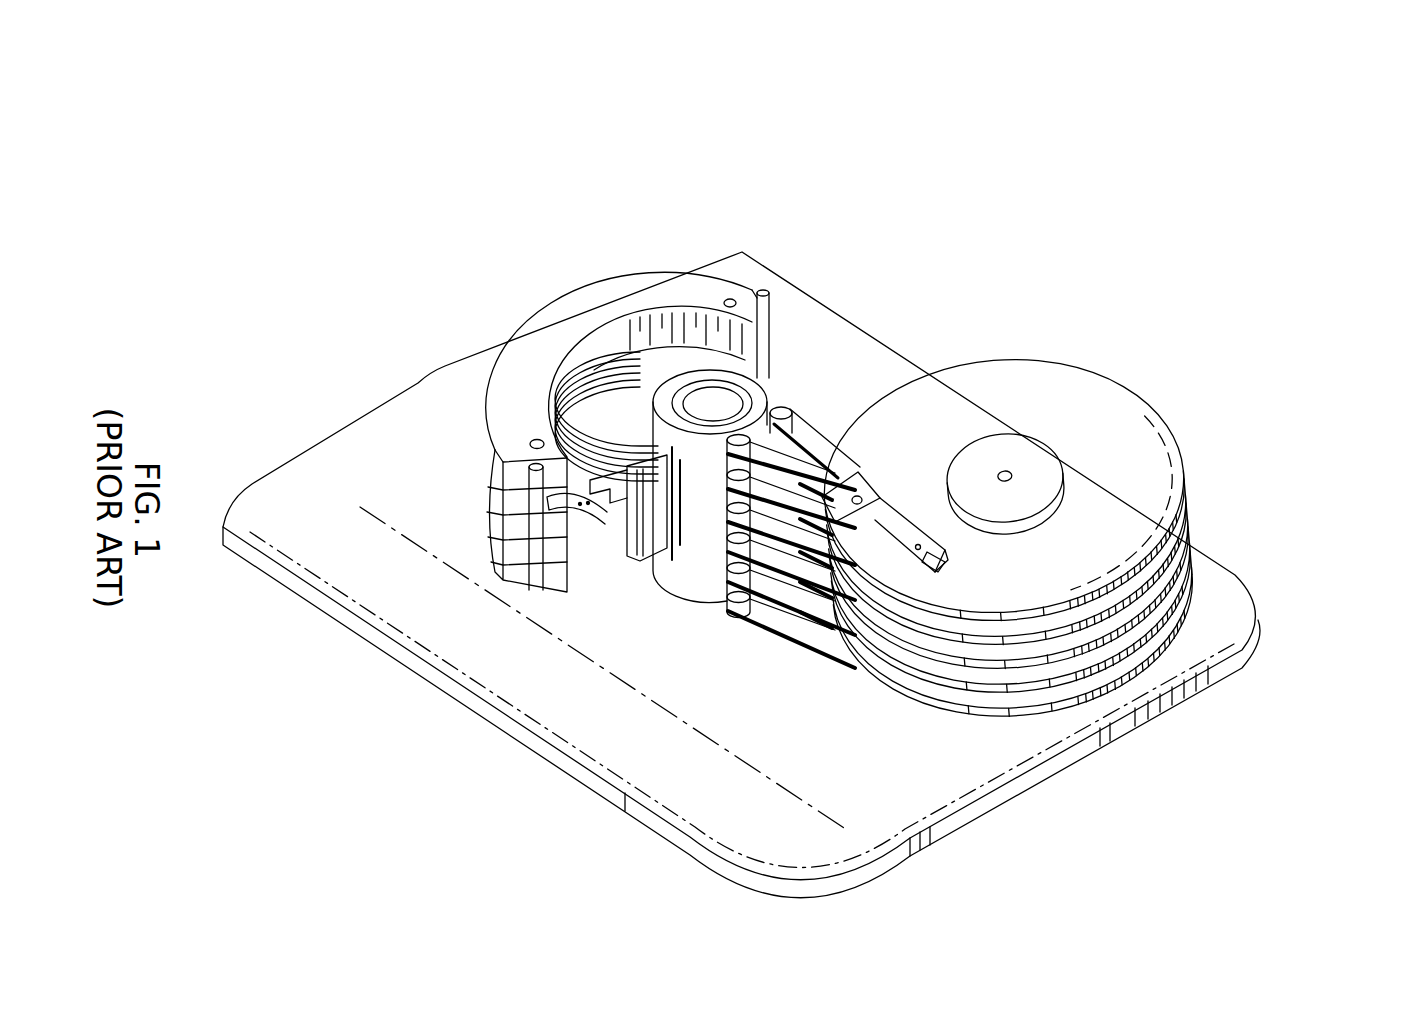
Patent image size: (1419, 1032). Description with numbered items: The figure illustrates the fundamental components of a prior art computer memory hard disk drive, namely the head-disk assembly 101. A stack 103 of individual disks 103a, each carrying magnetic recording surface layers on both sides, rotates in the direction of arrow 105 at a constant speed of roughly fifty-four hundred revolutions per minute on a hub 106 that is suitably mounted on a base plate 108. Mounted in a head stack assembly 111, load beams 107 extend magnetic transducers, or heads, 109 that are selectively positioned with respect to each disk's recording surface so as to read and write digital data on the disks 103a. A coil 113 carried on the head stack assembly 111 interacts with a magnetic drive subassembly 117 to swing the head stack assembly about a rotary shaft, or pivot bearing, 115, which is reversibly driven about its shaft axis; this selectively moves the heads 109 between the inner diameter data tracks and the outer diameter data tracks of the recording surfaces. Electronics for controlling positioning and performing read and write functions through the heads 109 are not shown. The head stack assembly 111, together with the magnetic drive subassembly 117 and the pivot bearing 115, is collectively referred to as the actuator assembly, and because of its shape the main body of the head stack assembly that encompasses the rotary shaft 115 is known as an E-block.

The head-disk assembly 101 is at (805, 228).
The stack 103 is at (1222, 508).
The individual disk 103a is at (1100, 390).
The arrow 105 is at (1130, 428).
The hub 106 is at (1040, 486).
The load beam 107 is at (827, 453).
The base plate 108 is at (552, 750).
The magnetic transducer 109 is at (927, 567).
The head stack assembly 111 is at (619, 606).
The coil 113 is at (600, 410).
The pivot bearing 115 is at (722, 407).
The magnetic drive subassembly 117 is at (583, 310).